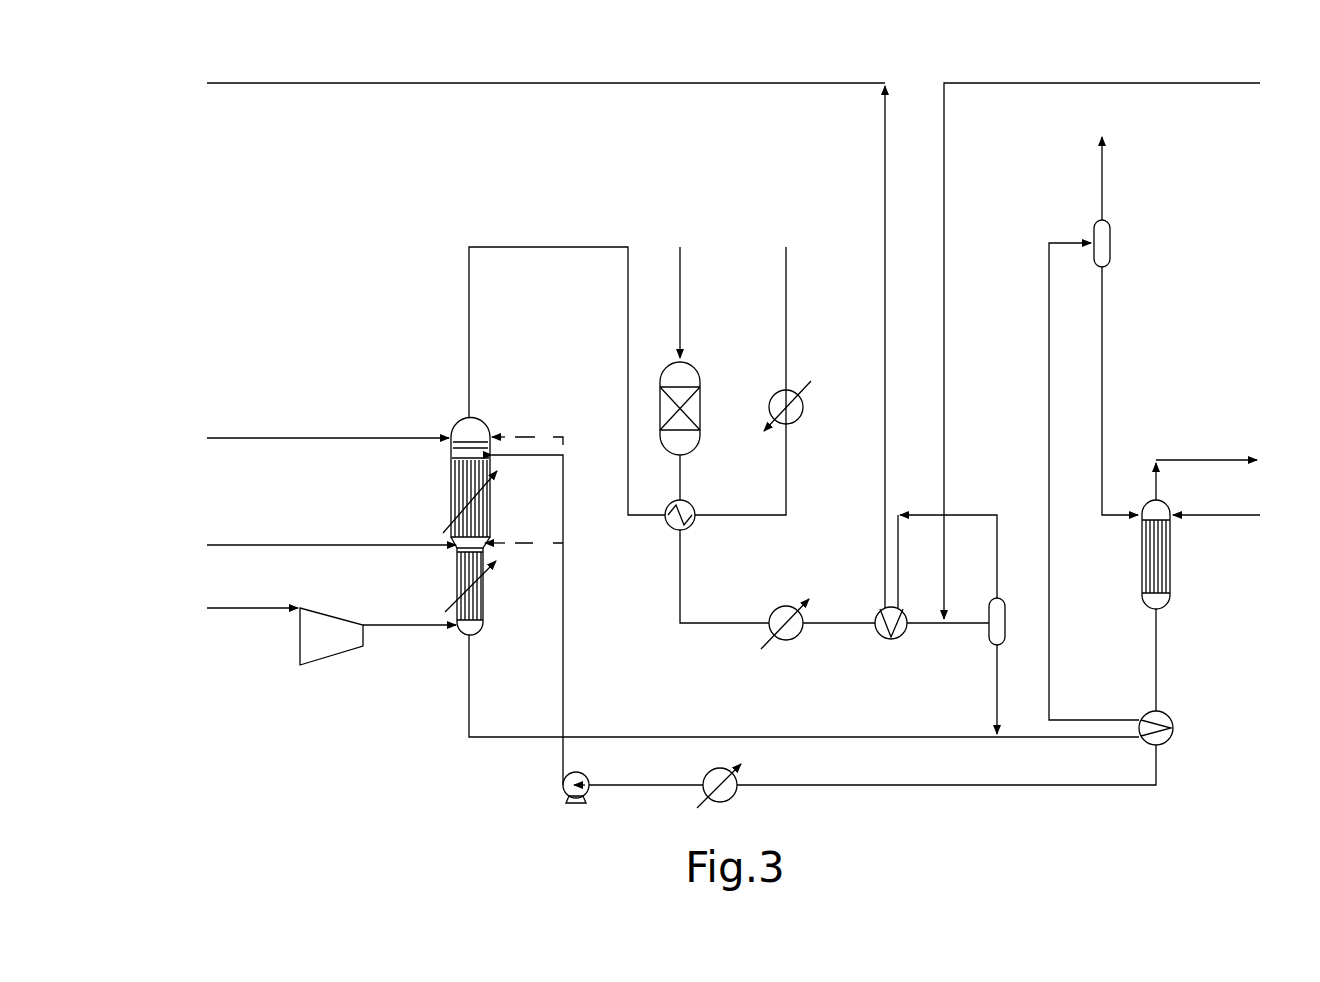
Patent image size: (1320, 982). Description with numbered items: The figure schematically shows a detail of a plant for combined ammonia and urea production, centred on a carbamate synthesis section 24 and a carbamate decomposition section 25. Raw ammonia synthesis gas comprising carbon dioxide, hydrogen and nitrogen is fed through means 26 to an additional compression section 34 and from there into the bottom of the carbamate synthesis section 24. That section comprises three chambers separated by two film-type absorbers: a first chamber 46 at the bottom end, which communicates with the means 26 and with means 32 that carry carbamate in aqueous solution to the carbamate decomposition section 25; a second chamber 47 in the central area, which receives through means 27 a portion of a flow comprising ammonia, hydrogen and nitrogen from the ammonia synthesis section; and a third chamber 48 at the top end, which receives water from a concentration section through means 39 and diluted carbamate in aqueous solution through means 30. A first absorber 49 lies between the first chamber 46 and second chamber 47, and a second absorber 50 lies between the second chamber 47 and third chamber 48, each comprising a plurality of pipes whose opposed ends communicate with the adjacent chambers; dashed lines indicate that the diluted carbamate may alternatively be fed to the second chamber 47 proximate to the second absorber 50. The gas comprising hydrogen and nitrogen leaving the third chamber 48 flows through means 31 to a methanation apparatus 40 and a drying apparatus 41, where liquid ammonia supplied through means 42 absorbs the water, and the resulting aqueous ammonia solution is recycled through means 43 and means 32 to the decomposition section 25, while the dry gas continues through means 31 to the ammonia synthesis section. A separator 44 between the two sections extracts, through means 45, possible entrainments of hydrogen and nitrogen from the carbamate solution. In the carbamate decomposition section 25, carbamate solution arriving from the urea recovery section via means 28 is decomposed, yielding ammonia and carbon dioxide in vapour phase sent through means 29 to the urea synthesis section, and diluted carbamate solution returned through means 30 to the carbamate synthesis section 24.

The carbamate synthesis section 24 is at (470, 484).
The carbamate decomposition section 25 is at (1140, 557).
The means for feeding raw ammonia synthesis gas flow 26 is at (252, 612).
The means for feeding flow comprising ammonia, hydrogen and nitrogen 27 is at (326, 543).
The means for feeding carbamate in aqueous solution 28 is at (1220, 520).
The means for feeding ammonia and carbon dioxide in vapour phase 29 is at (1206, 458).
The means for feeding diluted carbamate in aqueous solution 30 is at (565, 592).
The means for feeding gas flow comprising hydrogen and nitrogen 31 is at (541, 82).
The means for feeding carbamate in aqueous solution 32 is at (803, 735).
The additional compression section 34 is at (334, 670).
The means for feeding flow comprising water 39 is at (326, 436).
The methanation apparatus 40 is at (702, 378).
The drying apparatus 41 is at (988, 640).
The means for feeding liquid ammonia 42 is at (1098, 82).
The means for recycling aqueous ammonia solution 43 is at (995, 692).
The separator 44 is at (1112, 240).
The means for extracting hydrogen and nitrogen entrainments 45 is at (1104, 175).
The first chamber 46 is at (483, 633).
The second chamber 47 is at (492, 548).
The third chamber 48 is at (478, 428).
The first absorber 49 is at (455, 580).
The second absorber 50 is at (450, 483).